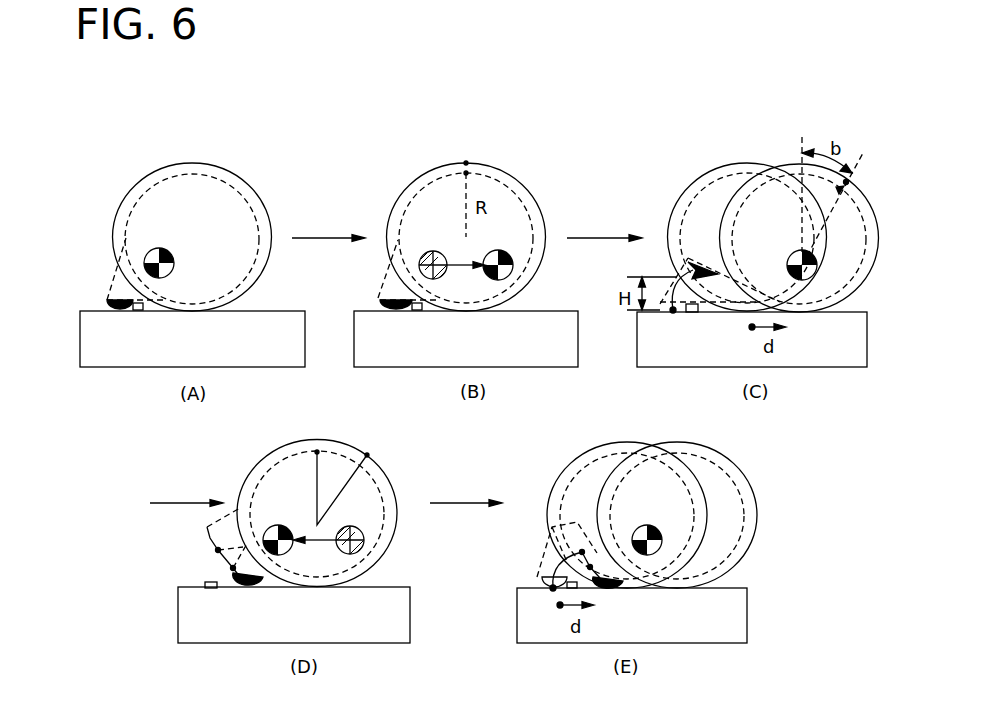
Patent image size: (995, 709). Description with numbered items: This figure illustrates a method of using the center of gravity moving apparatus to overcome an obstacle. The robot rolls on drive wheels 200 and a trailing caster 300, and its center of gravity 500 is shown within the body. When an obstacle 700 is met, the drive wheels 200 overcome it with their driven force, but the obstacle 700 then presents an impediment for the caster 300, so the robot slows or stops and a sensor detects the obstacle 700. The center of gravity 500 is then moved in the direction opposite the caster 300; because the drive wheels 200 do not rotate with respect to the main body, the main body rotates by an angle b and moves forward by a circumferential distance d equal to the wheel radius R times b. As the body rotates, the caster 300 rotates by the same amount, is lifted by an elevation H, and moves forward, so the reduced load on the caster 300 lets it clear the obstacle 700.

The drive wheels 200 is at (133, 195).
The center of gravity 500 is at (146, 257).
The caster 300 is at (107, 302).
The obstacle 700 is at (138, 312).